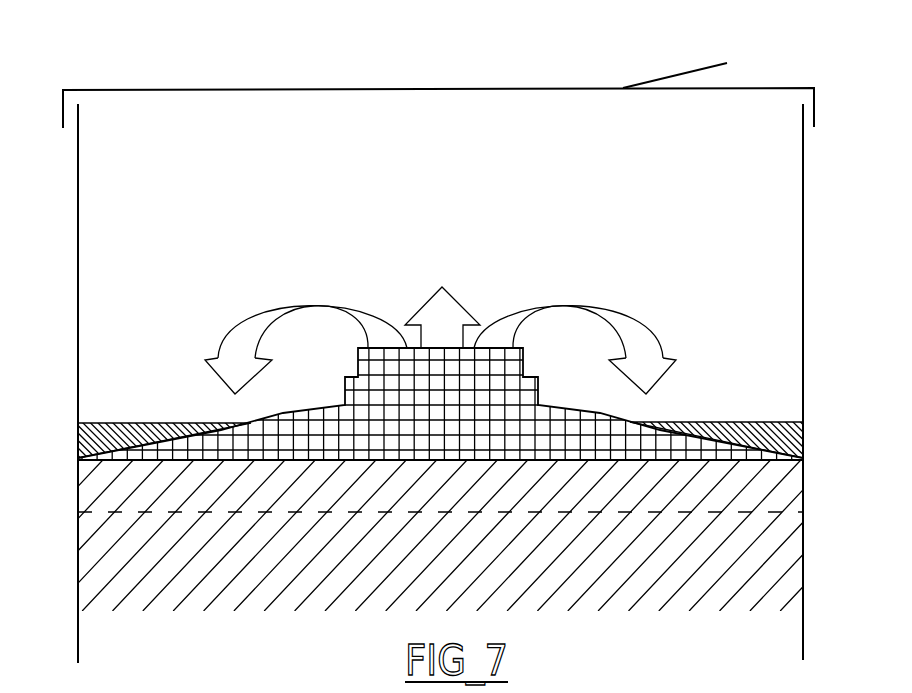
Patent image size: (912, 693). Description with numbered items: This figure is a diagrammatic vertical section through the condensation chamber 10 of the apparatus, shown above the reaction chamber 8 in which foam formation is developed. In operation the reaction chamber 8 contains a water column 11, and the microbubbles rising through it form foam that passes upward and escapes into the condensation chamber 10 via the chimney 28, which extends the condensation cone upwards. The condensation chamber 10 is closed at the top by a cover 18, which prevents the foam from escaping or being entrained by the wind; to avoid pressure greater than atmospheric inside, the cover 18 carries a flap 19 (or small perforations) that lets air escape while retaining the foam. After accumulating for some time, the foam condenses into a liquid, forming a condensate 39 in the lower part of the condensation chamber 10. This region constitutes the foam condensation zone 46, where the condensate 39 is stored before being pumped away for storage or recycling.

The reaction chamber 8 is at (805, 578).
The condensation chamber 10 is at (805, 337).
The water column 11 is at (773, 547).
The cover 18 is at (817, 108).
The flap 19 is at (665, 61).
The chimney 28 is at (537, 381).
The condensate 39 is at (100, 440).
The foam condensation zone 46 is at (113, 264).